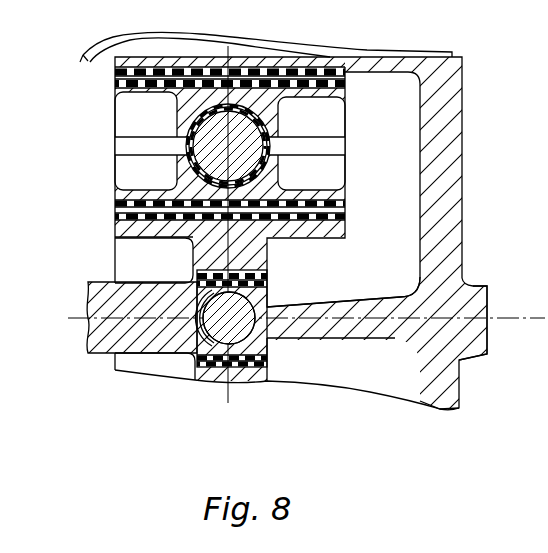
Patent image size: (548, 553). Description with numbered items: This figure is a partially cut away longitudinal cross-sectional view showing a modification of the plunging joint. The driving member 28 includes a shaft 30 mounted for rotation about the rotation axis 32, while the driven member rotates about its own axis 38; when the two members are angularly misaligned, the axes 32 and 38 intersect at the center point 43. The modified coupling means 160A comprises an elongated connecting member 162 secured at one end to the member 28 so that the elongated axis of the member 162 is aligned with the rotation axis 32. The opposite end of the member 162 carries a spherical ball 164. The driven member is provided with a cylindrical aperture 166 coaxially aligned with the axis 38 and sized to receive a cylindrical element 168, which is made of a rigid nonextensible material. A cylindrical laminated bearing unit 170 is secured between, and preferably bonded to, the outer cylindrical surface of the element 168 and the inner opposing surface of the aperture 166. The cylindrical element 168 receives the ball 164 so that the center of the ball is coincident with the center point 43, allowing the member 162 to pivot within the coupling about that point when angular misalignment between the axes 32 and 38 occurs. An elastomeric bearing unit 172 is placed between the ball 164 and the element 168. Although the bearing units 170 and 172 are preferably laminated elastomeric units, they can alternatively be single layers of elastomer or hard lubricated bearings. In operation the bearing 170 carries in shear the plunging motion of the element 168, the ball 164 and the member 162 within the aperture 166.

The driving member 28 is at (464, 143).
The shaft 30 is at (474, 283).
The rotation axis 32 is at (399, 313).
The axis of the driven member 38 is at (110, 318).
The center point 43 is at (220, 316).
The means 160A is at (312, 298).
The elongated connecting member 162 is at (367, 340).
The spherical ball 164 is at (250, 300).
The cylindrical aperture 166 is at (266, 356).
The cylindrical element 168 is at (250, 277).
The cylindrical laminated bearing unit 170 is at (200, 281).
The elastomeric bearing unit 172 is at (240, 270).